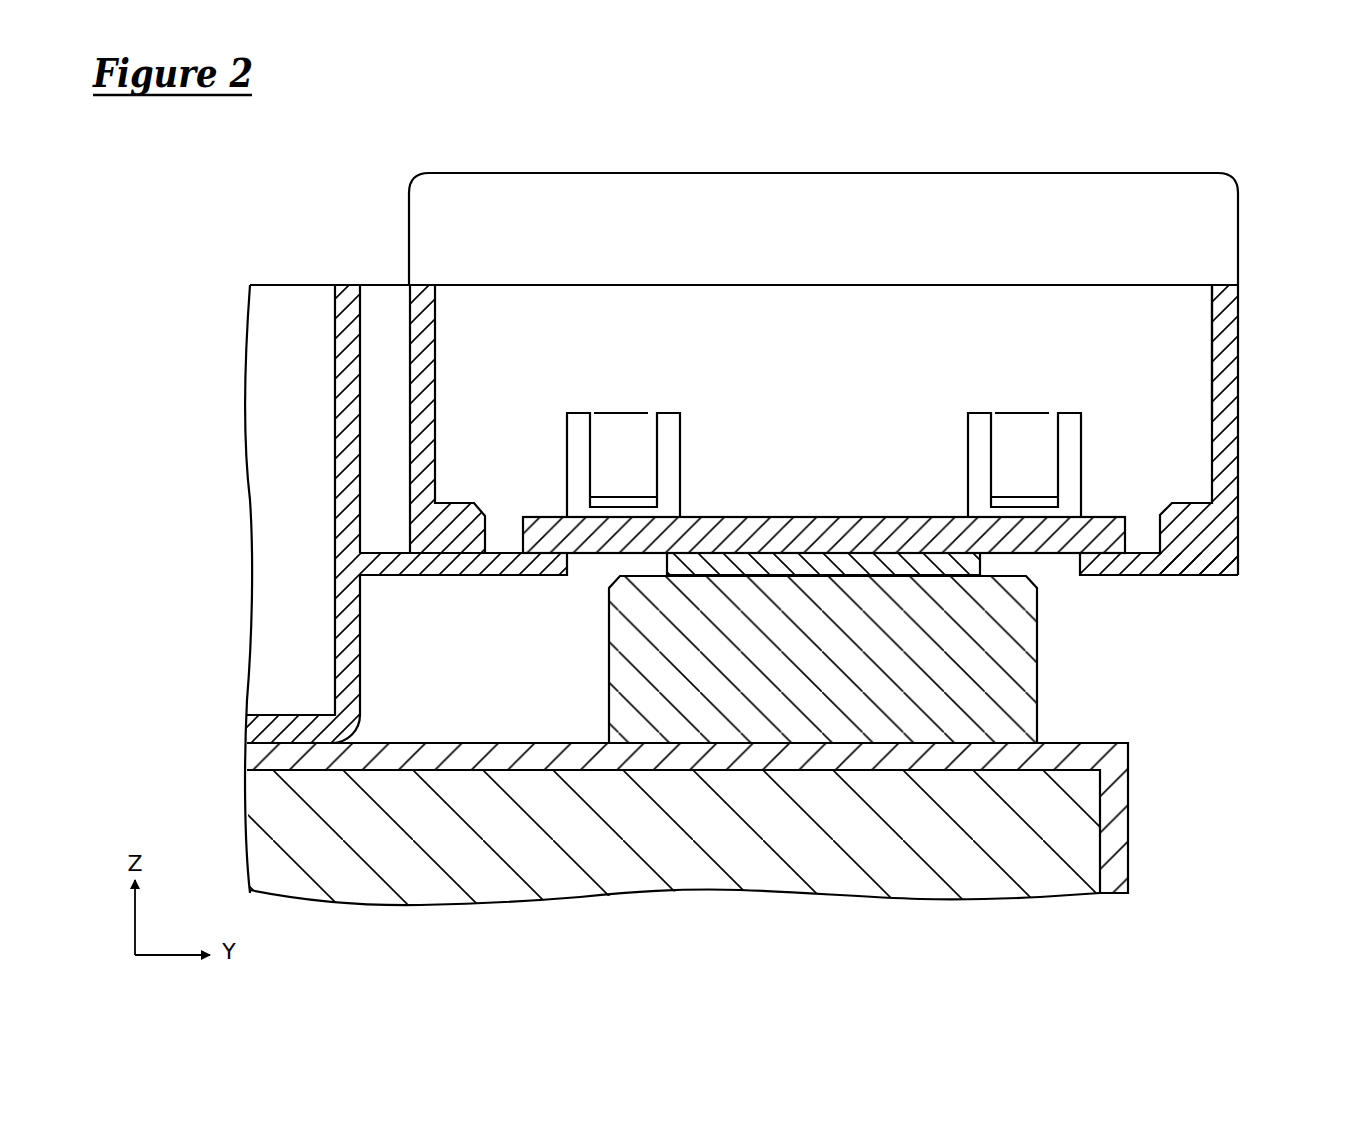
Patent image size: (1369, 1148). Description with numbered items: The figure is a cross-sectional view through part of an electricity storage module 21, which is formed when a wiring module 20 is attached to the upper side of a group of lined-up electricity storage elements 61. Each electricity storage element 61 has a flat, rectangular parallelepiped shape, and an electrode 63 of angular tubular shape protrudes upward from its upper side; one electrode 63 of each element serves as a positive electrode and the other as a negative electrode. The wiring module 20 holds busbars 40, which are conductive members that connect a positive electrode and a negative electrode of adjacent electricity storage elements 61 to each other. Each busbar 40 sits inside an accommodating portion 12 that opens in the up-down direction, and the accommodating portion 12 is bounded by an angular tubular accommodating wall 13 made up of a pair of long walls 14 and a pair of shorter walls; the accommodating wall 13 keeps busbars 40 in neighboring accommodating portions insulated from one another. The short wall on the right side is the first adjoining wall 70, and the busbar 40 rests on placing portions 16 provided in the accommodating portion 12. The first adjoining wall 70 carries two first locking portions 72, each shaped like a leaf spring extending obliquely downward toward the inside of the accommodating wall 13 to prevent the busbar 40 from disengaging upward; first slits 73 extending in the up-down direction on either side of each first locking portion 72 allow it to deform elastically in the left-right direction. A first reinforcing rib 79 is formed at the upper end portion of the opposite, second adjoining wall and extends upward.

The electricity storage module 21 is at (1250, 127).
The wiring module 20 is at (1185, 198).
The first adjoining wall 70 is at (481, 300).
The first reinforcing rib 79 is at (1118, 196).
The accommodating portion 12 is at (1212, 328).
The accommodating wall 13 is at (1225, 327).
The long wall 14 is at (423, 350).
The placing portion 16 is at (518, 558).
The busbar 40 is at (811, 530).
The first slit 73 is at (568, 447).
The first locking portion 72 is at (623, 440).
The electrode 63 is at (918, 568).
The electricity storage element 61 is at (1070, 838).